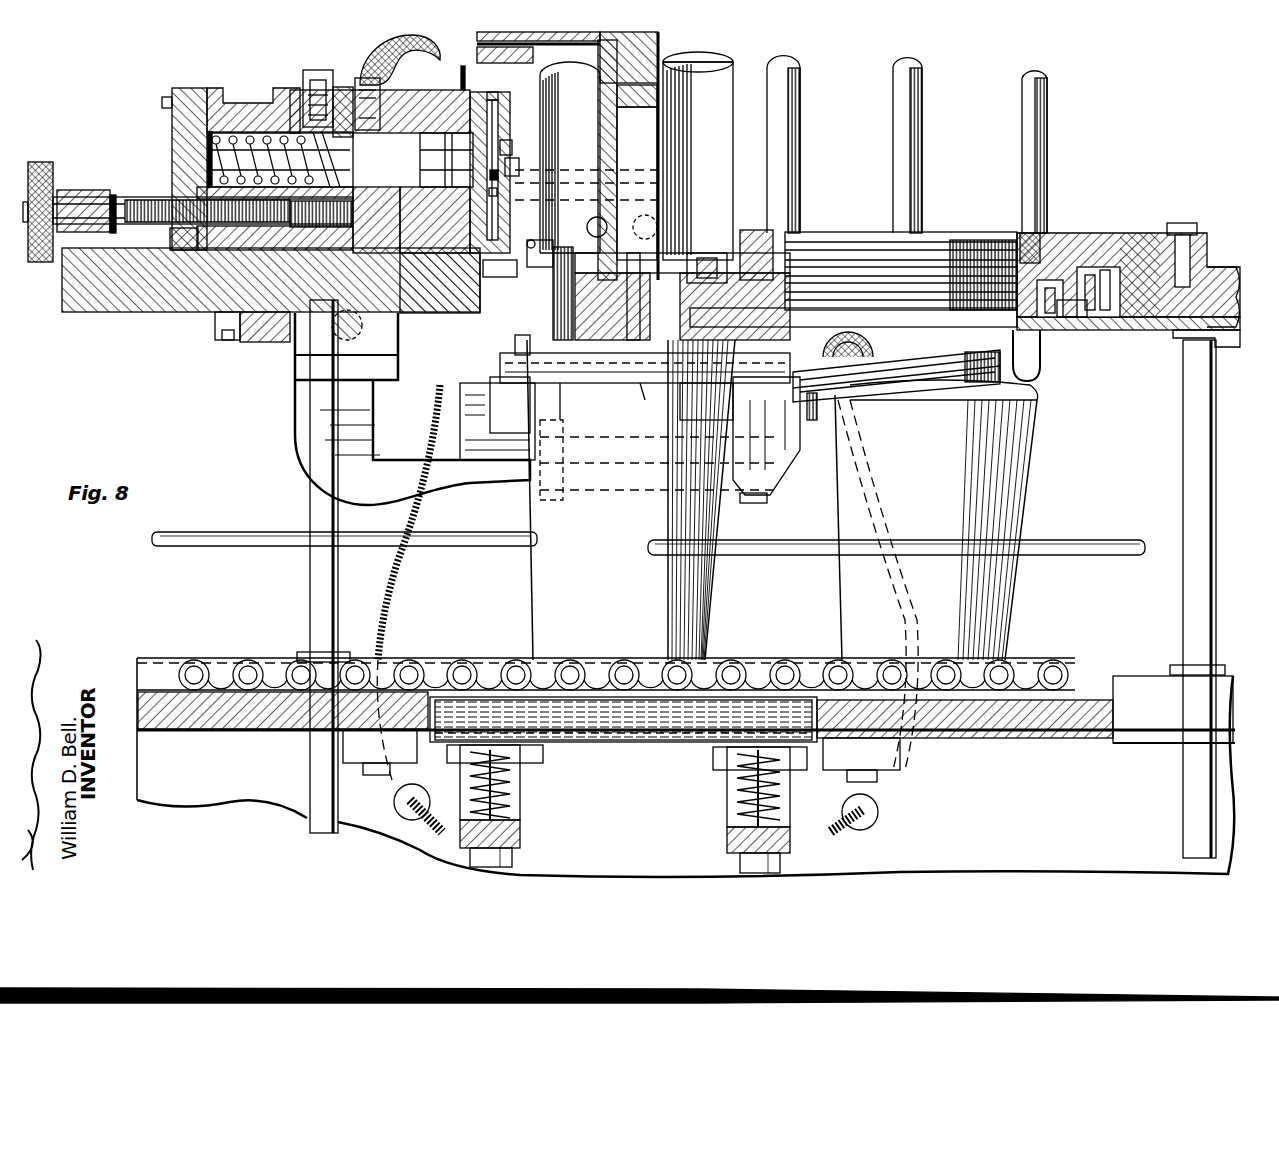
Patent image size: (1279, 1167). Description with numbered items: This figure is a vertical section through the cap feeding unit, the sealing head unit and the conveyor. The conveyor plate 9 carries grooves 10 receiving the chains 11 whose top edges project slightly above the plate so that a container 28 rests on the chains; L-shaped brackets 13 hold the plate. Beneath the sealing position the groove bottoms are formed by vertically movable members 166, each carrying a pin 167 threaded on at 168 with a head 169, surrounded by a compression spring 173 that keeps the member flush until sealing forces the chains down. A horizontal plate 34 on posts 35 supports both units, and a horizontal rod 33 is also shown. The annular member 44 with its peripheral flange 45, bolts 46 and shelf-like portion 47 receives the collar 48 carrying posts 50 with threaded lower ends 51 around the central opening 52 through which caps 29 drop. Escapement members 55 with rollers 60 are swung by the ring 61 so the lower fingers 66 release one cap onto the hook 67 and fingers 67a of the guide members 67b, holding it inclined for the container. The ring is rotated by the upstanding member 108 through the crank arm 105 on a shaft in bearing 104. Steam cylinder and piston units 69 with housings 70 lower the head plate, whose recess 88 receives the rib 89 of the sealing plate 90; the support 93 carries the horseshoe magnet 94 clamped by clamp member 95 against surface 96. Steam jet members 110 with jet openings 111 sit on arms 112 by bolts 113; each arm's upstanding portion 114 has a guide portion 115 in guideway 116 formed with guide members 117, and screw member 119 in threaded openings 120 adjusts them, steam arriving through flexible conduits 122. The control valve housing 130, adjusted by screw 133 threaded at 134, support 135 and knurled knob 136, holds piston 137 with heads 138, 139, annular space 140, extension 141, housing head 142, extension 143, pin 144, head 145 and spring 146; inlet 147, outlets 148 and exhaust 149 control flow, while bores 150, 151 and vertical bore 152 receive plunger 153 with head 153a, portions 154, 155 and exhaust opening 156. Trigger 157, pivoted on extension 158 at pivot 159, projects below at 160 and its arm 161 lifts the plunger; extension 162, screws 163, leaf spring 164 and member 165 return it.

The plate 9 is at (217, 705).
The grooves 10 is at (166, 678).
The chains 11 is at (237, 668).
The L-shaped brackets 13 is at (545, 760).
The container 28 is at (985, 463).
The cap 29 is at (932, 245).
The horizontal rod 33 is at (505, 548).
The plate 34 is at (1178, 341).
The posts 35 is at (322, 575).
The annular member 44 is at (1140, 236).
The peripheral flange 45 is at (1210, 262).
The bolts 46 is at (1184, 224).
The shelf-like portion 47 is at (1113, 330).
The annular collar 48 is at (1087, 240).
The upstanding posts 50 is at (1030, 182).
The reduced threaded lower end 51 is at (1022, 234).
The central opening 52 is at (857, 233).
The escapement member 55 is at (1052, 318).
The roller 60 is at (1077, 322).
The ring 61 is at (1108, 252).
The lower knife-like finger 66 is at (1012, 324).
The hook 67 is at (1036, 372).
The fingers 67a is at (896, 399).
The guide members 67b is at (810, 375).
The steam cylinder and piston units 69 is at (725, 58).
The cylindrical housing 70 is at (790, 78).
The recess 88 is at (645, 386).
The rib 89 is at (680, 385).
The sealing plate 90 is at (603, 386).
The upstanding support 93 is at (598, 119).
The horseshoe magnet 94 is at (657, 97).
The clamp member 95 is at (698, 156).
The surface 96 is at (600, 97).
The bearing 104 is at (668, 180).
The crank arm 105 is at (665, 220).
The upstanding member 108 is at (760, 238).
The steam jet members 110 is at (769, 436).
The jet opening 111 is at (641, 393).
The arm 112 is at (497, 450).
The bolts 113 is at (770, 500).
The upstanding portion 114 is at (345, 422).
The guide portion 115 is at (278, 313).
The guideway 116 is at (226, 306).
The guide members 117 is at (242, 340).
The screw member 119 is at (346, 367).
The threaded openings 120 is at (355, 340).
The flexible conduit 122 is at (403, 517).
The cylindrical housing 130 is at (209, 95).
The screw 133 is at (137, 200).
The threaded connection 134 is at (172, 234).
The support 135 is at (86, 190).
The knurled knob 136 is at (40, 162).
The piston 137 is at (425, 135).
The head 138 is at (348, 90).
The head 139 is at (448, 135).
The annular space 140 is at (370, 100).
The extension 141 is at (470, 66).
The head 142 is at (488, 160).
The extension 143 is at (325, 95).
The pin 144 is at (246, 103).
The head 145 is at (200, 150).
The compression spring 146 is at (208, 134).
The steam inlet 147 is at (372, 78).
The steam outlets 148 is at (330, 154).
The exhaust opening 149 is at (306, 80).
The bore 150 is at (435, 220).
The bore 151 is at (413, 220).
The vertical bore 152 is at (498, 176).
The plunger 153 is at (498, 210).
The head 153a is at (495, 93).
The enlarged portion 154 is at (498, 191).
The enlarged portion 155 is at (509, 142).
The exhaust opening 156 is at (512, 160).
The trigger 157 is at (553, 305).
The extension 158 is at (528, 267).
The pivot 159 is at (603, 235).
The lower end of trigger 160 is at (524, 354).
The horizontally extending arm 161 is at (690, 268).
The horizontal extension 162 is at (477, 35).
The screws 163 is at (660, 40).
The leaf spring 164 is at (572, 157).
The member 165 is at (533, 57).
The vertically movable members 166 is at (645, 720).
The pin 167 is at (521, 805).
The threaded connection 168 is at (760, 771).
The head 169 is at (781, 863).
The compression spring 173 is at (518, 788).